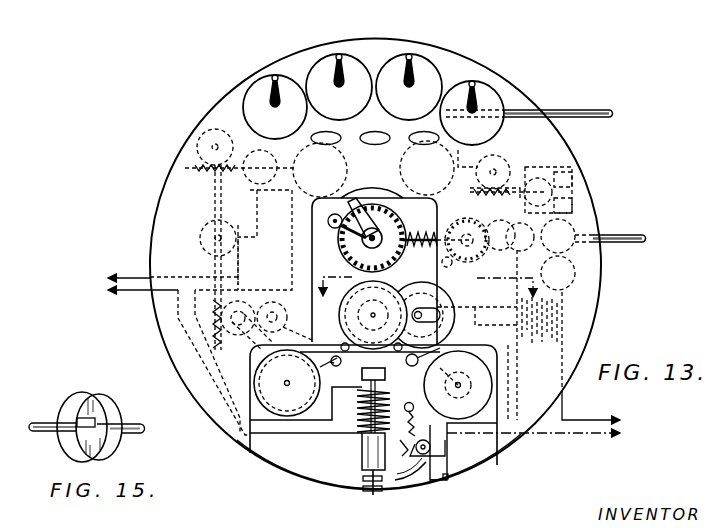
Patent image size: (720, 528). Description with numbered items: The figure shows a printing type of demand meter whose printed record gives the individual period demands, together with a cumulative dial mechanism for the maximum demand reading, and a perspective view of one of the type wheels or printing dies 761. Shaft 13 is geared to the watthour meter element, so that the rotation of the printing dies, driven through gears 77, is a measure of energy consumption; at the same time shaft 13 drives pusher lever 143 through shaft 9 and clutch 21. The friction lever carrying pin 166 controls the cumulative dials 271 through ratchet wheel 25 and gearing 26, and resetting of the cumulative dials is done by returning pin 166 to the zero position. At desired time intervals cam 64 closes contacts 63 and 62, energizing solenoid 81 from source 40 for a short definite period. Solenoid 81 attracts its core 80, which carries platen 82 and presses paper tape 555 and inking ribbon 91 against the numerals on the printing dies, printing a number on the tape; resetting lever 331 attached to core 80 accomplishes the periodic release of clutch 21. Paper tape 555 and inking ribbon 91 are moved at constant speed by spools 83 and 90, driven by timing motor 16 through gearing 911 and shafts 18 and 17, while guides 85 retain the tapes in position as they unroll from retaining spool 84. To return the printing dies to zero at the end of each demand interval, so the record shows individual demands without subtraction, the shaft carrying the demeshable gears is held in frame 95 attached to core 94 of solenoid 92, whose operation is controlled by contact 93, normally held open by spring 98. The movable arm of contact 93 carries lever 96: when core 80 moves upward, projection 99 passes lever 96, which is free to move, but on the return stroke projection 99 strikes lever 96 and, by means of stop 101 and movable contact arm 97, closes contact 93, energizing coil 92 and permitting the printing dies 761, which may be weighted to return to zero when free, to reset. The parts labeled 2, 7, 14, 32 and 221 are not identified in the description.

In FIG. 13, the dials 2 is at (352, 62).
In FIG. 13, the cumulative dials 271 is at (396, 122).
In FIG. 13, the shaft 7 is at (561, 111).
In FIG. 13, the shaft 18 is at (186, 168).
In FIG. 13, the contact 63 is at (259, 193).
In FIG. 13, the cam 64 is at (200, 240).
In FIG. 13, the contact 62 is at (240, 249).
In FIG. 13, the source 40 is at (595, 206).
In FIG. 13, the gearing 26 is at (396, 196).
In FIG. 13, the ratchet wheel 25 is at (344, 242).
In FIG. 13, the pusher lever 143 is at (357, 201).
In FIG. 13, the pin 32 is at (333, 218).
In FIG. 13, the pin 166 is at (339, 227).
In FIG. 13, the spring 221 is at (422, 227).
In FIG. 13, the shaft 9 is at (436, 254).
In FIG. 13, the section line 14 is at (425, 278).
In FIG. 13, the printing dies 761 is at (387, 292).
In FIG. 15, the printing dies 761 is at (113, 406).
In FIG. 13, the frame 95 is at (452, 307).
In FIG. 13, the gearing 911 is at (250, 309).
In FIG. 13, the spool 90 is at (284, 314).
In FIG. 13, the inking ribbon 91 is at (335, 346).
In FIG. 13, the guides 85 is at (343, 361).
In FIG. 13, the paper tape 555 is at (325, 368).
In FIG. 13, the spool 83 is at (306, 404).
In FIG. 13, the retaining spool 84 is at (430, 382).
In FIG. 13, the platen 82 is at (362, 375).
In FIG. 13, the solenoid 81 is at (362, 409).
In FIG. 13, the core 80 is at (362, 454).
In FIG. 13, the projection 99 is at (377, 487).
In FIG. 13, the resetting lever 331 is at (392, 482).
In FIG. 13, the lever 96 is at (398, 446).
In FIG. 13, the spring 98 is at (412, 414).
In FIG. 13, the movable contact arm 97 is at (425, 440).
In FIG. 13, the stop 101 is at (447, 455).
In FIG. 13, the contact 93 is at (438, 480).
In FIG. 13, the timing motor 16 is at (561, 170).
In FIG. 13, the shaft 17 is at (490, 197).
In FIG. 13, the clutch 21 is at (488, 231).
In FIG. 13, the shaft 13 is at (611, 237).
In FIG. 13, the gear 77 is at (572, 256).
In FIG. 13, the core 94 is at (477, 363).
In FIG. 13, the solenoid 92 is at (537, 358).